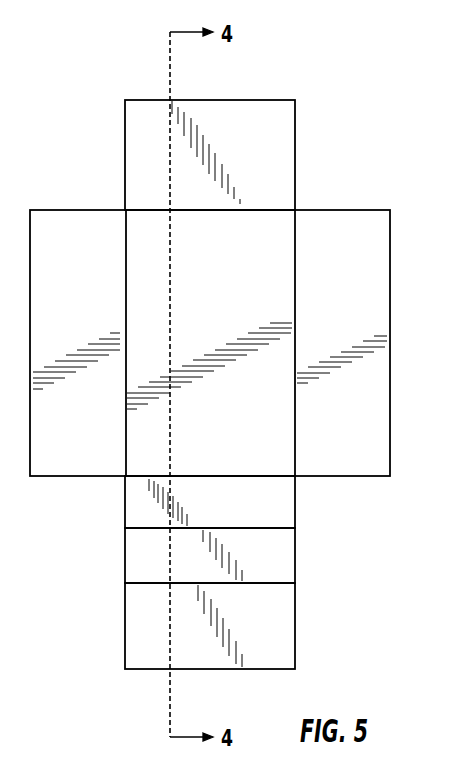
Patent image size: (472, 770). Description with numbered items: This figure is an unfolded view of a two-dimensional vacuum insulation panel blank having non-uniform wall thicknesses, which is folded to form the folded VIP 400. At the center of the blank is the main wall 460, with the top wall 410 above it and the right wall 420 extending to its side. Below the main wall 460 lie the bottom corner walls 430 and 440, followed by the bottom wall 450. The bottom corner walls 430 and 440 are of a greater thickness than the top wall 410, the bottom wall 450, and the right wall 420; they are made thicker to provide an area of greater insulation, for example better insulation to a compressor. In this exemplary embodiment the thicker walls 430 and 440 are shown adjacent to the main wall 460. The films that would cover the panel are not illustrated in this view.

The folded VIP 400 is at (231, 368).
The top wall 410 is at (275, 160).
The right wall 420 is at (378, 325).
The bottom corner wall 430 is at (287, 496).
The bottom corner wall 440 is at (287, 545).
The bottom wall 450 is at (287, 629).
The main wall 460 is at (258, 253).